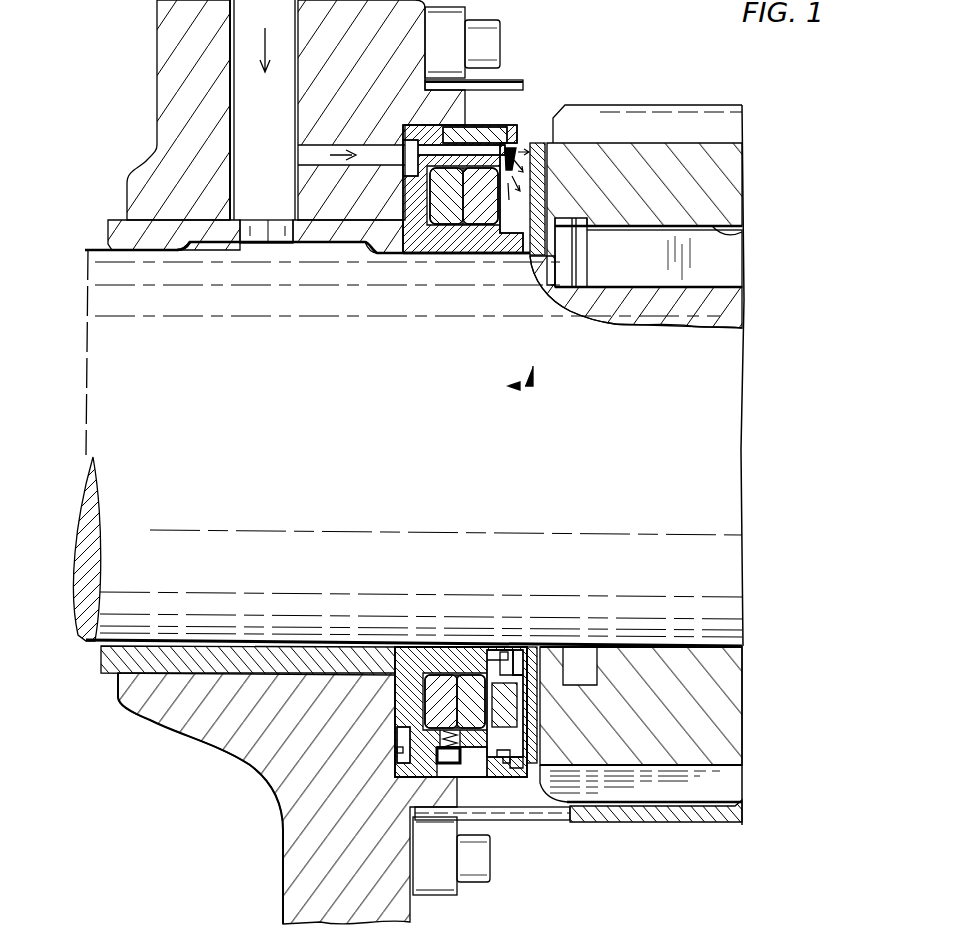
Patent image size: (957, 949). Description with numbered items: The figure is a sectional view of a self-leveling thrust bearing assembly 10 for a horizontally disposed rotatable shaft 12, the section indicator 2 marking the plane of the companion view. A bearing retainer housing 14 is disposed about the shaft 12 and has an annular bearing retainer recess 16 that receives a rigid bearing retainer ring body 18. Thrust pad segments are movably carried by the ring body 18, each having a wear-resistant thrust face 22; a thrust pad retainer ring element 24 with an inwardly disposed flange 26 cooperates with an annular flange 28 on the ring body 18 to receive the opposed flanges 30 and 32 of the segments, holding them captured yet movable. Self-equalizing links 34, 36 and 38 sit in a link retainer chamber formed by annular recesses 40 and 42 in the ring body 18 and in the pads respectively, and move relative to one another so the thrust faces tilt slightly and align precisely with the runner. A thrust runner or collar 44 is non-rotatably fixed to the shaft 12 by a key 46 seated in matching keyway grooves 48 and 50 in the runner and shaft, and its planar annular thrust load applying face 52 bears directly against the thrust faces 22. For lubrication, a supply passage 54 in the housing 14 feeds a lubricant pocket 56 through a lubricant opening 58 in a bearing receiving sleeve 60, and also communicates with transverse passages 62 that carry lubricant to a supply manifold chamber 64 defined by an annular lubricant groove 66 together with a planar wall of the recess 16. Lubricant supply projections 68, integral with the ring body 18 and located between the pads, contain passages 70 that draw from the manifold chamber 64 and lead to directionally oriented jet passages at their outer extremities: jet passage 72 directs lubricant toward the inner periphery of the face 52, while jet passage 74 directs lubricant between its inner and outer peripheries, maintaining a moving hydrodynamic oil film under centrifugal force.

The section line for FIG. 2 is at (510, 383).
The thrust bearing assembly 10 is at (388, 306).
The rotatable shaft 12 is at (105, 392).
The bearing retainer housing 14 is at (272, 760).
The annular bearing retainer groove or recess 16 is at (398, 752).
The bearing retainer ring body structure 18 is at (405, 697).
The thrust face 22 is at (540, 727).
The thrust pad retainer ring element 24 is at (455, 765).
The inwardly disposed flange 26 is at (510, 765).
The annular flange 28 is at (532, 642).
The flange 30 is at (483, 778).
The flange 32 is at (497, 642).
The self-equalizing link 34 is at (412, 642).
The self-equalizing link 36 is at (455, 642).
The self-equalizing link 38 is at (505, 697).
The annular groove or recess 40 is at (450, 230).
The annular groove or recess 42 is at (518, 765).
The thrust runner or collar 44 is at (720, 718).
The key 46 is at (725, 258).
The keyway groove 48 is at (735, 225).
The keyway groove 50 is at (720, 280).
The thrust load applying face 52 is at (538, 257).
The lubricant supply channel or passage 54 is at (232, 92).
The lubricant pocket 56 is at (203, 250).
The lubricant opening 58 is at (270, 232).
The bearing receiving sleeve 60 is at (140, 232).
The transverse passage 62 is at (308, 146).
The lubricant supply manifold chamber 64 is at (410, 158).
The annular lubricant groove 66 is at (400, 737).
The lubricant supply projection 68 is at (512, 135).
The lubricant supply passage 70 is at (470, 155).
The lubricant jet passage 72 is at (519, 189).
The lubricant jet passage 74 is at (552, 162).